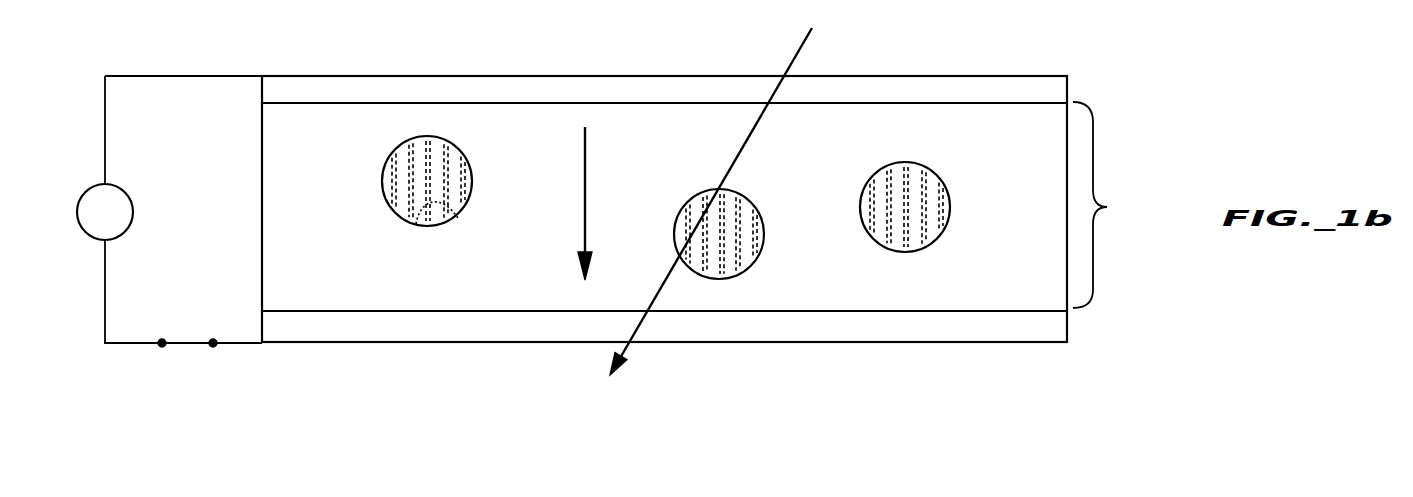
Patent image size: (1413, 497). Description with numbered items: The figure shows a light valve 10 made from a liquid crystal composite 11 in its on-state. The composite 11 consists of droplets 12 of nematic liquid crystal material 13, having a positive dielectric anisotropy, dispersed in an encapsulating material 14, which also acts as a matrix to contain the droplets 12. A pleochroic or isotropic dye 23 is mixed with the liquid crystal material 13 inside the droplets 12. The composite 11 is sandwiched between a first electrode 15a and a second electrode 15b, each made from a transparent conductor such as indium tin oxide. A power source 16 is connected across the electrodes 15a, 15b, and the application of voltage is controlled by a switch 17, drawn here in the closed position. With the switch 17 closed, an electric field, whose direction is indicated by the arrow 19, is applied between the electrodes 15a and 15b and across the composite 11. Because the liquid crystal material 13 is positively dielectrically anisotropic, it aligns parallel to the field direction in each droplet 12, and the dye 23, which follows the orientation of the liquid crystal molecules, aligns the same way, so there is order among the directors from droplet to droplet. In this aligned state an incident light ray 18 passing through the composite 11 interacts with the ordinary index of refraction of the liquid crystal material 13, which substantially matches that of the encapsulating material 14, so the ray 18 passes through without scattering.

The light valve 10 is at (1116, 85).
The liquid crystal composite 11 is at (1108, 207).
The droplets 12 is at (460, 155).
The liquid crystal material 13 is at (418, 222).
The encapsulating material 14 is at (665, 137).
The first electrode 15a is at (952, 72).
The second electrode 15b is at (1050, 330).
The power source 16 is at (128, 192).
The switch 17 is at (190, 343).
The incident light ray 18 is at (800, 52).
The arrow 19 is at (585, 163).
The dye 23 is at (433, 195).